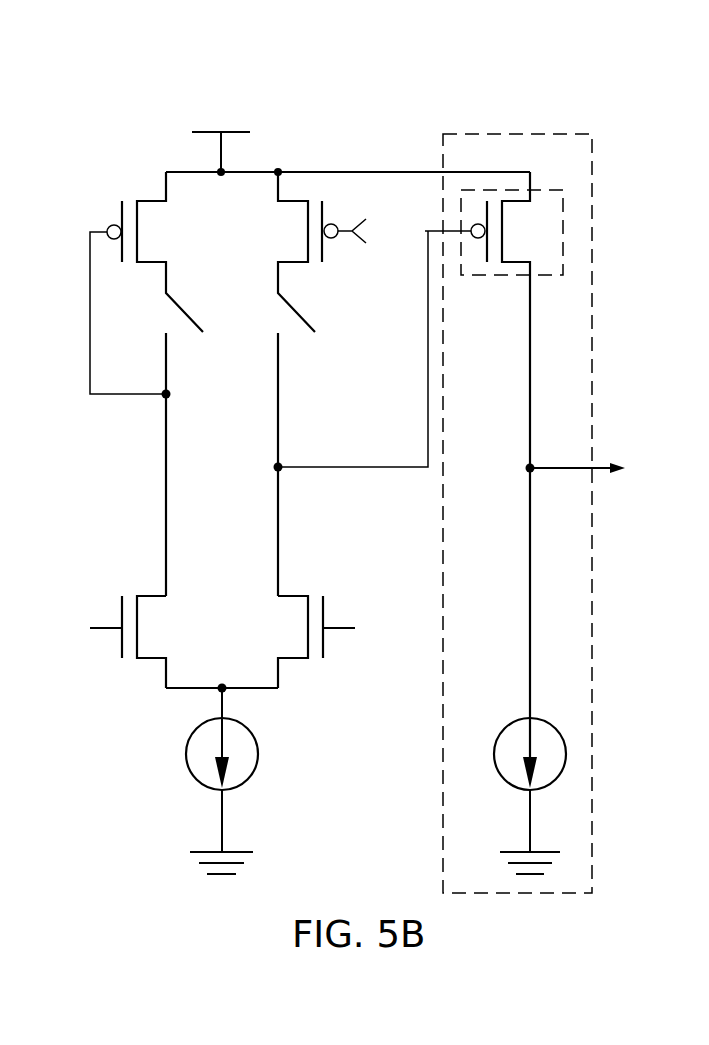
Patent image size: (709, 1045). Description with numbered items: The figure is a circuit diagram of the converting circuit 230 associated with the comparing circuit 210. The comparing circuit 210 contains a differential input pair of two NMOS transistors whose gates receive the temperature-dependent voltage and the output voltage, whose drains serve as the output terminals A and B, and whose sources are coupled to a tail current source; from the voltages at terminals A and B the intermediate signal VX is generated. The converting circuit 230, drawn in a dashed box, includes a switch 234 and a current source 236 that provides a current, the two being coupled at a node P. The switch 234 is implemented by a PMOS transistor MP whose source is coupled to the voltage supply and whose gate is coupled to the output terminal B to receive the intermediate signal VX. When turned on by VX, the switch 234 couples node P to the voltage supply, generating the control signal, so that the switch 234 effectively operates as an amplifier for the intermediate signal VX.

The comparing circuit 210 is at (377, 88).
The converting circuit 230 is at (592, 162).
The switch 234 is at (563, 225).
The current source 236 is at (567, 752).